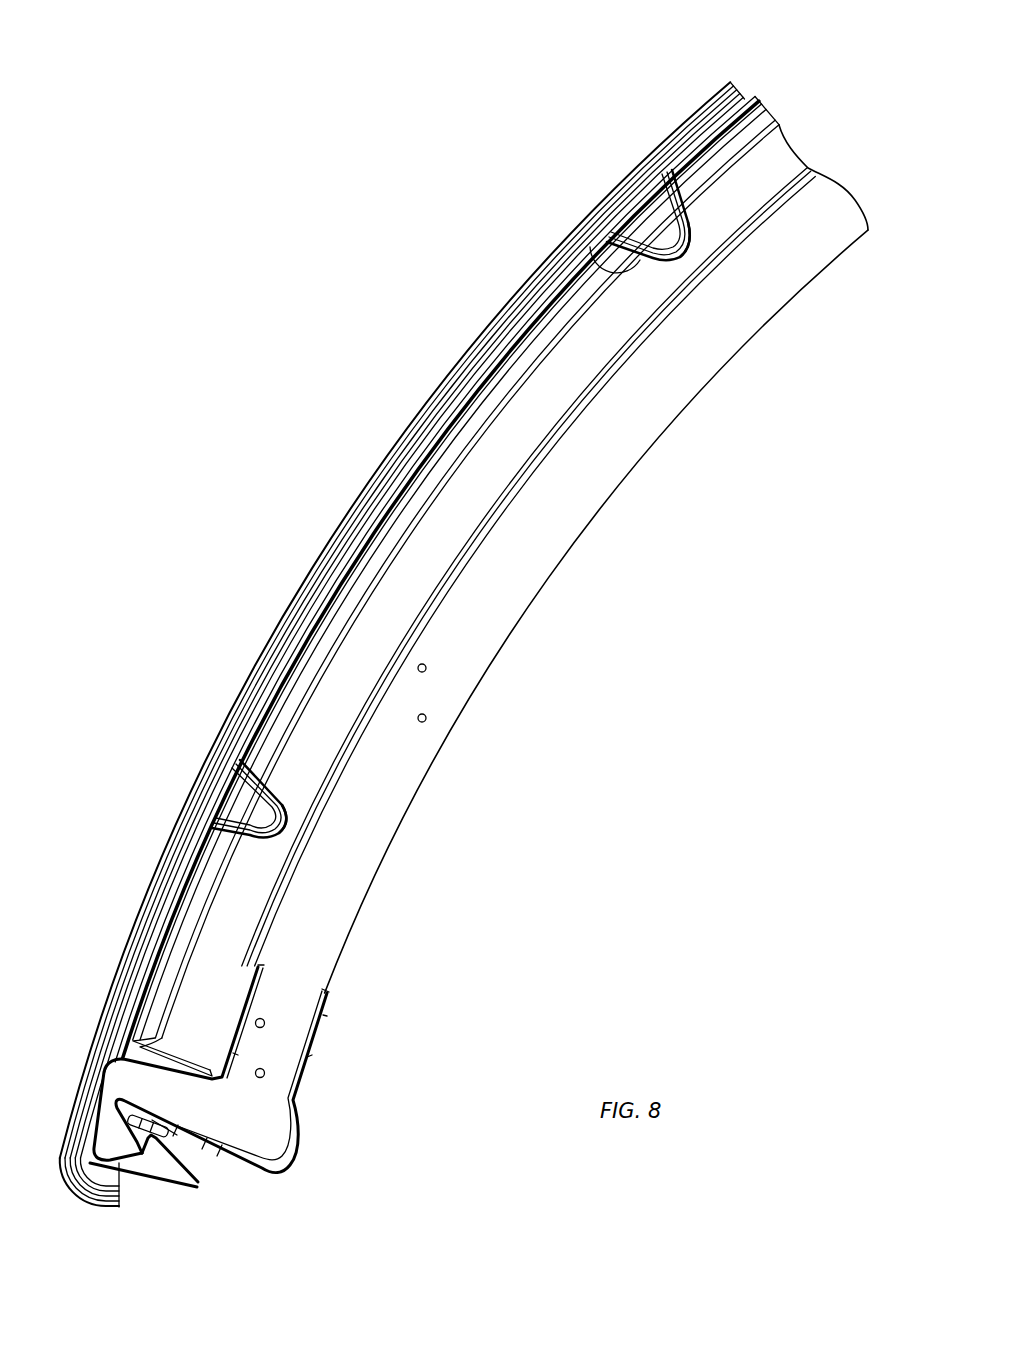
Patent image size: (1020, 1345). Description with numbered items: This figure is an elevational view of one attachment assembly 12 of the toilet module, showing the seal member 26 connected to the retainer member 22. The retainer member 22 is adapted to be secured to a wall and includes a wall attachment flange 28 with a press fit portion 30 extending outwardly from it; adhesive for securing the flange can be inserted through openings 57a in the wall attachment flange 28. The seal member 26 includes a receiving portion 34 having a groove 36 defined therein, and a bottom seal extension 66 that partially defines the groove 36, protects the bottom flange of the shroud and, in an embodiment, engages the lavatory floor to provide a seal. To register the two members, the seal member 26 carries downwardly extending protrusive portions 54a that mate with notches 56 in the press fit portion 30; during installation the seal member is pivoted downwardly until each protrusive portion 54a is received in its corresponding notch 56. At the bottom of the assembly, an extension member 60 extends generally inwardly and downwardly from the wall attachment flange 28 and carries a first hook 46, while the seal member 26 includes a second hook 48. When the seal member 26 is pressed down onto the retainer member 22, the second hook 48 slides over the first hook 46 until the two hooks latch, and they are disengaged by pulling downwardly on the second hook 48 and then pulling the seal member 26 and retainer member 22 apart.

The attachment assembly 12 is at (826, 108).
The retainer member 22 is at (837, 213).
The seal member 26 is at (693, 120).
The wall attachment flange 28 is at (405, 793).
The press fit portion 30 is at (363, 627).
The receiving portion 34 is at (128, 973).
The groove 36 is at (367, 507).
The first hook 46 is at (200, 1172).
The second hook 48 is at (173, 1177).
The protrusive portion 54a is at (687, 258).
The notch 56 is at (592, 254).
The opening 57a is at (427, 719).
The extension member 60 is at (297, 1103).
The bottom seal extension 66 is at (112, 1210).